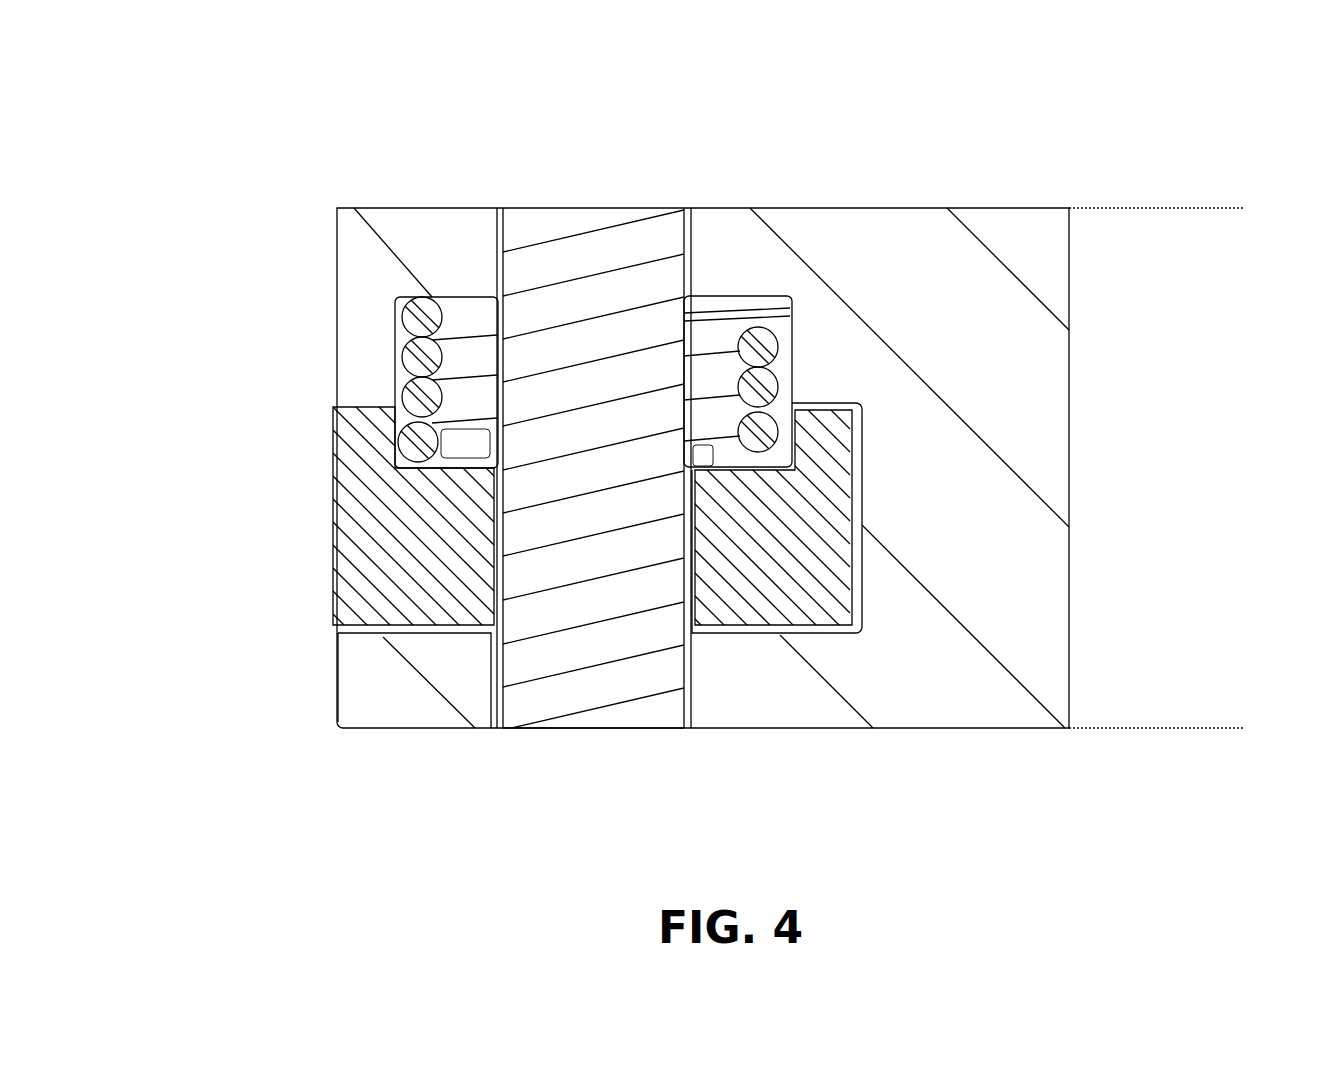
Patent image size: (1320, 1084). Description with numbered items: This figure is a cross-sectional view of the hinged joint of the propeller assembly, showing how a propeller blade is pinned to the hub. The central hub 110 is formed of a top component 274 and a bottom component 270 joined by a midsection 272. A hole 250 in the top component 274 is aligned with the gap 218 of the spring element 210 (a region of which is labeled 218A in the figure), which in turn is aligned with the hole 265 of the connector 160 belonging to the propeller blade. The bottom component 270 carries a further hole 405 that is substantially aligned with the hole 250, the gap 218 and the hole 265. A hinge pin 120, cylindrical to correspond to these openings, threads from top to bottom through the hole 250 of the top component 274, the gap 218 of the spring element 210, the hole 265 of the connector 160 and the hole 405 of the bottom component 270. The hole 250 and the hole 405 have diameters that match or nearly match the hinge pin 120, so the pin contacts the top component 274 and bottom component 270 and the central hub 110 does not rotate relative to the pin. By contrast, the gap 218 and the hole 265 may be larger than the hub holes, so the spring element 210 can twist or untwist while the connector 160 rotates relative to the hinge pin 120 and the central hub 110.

The central hub 110 is at (1000, 197).
The hinge pin 120 is at (631, 728).
The connector 160 is at (333, 517).
The spring element 210 is at (467, 317).
The gap 218 is at (497, 358).
The race surface 218A is at (454, 527).
The hole 250 is at (493, 255).
The hole 265 is at (490, 573).
The bottom component 270 is at (410, 685).
The midsection 272 is at (964, 533).
The top component 274 is at (430, 248).
The hole 405 is at (496, 640).